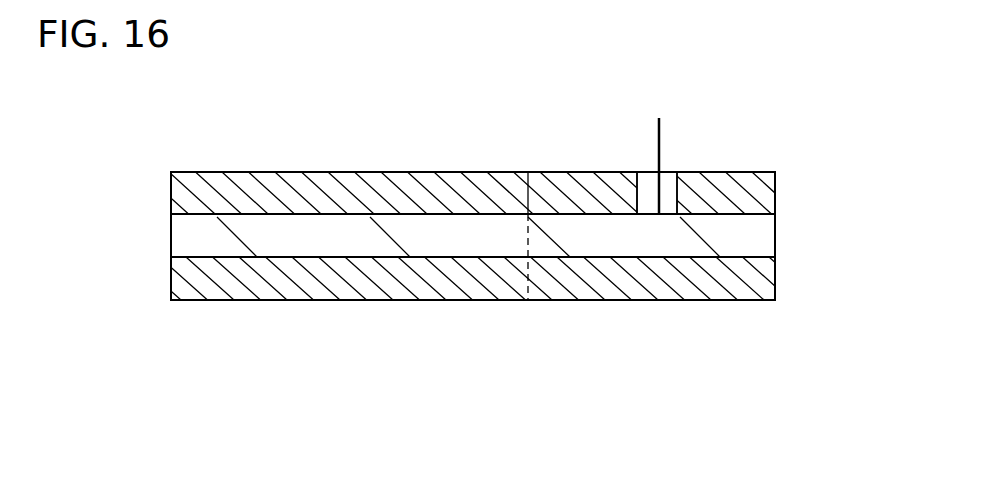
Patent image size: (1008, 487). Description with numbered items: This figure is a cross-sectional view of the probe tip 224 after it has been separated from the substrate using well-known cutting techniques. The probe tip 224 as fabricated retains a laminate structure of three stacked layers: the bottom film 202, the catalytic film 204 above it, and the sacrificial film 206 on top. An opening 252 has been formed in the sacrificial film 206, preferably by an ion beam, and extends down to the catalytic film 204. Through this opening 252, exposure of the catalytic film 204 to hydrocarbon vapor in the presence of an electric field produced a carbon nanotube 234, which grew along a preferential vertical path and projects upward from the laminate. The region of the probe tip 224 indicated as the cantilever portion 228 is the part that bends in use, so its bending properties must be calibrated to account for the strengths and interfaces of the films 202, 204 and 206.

The probe tip 224 is at (309, 143).
The carbon nanotube 234 is at (657, 155).
The opening 252 is at (670, 175).
The sacrificial film 206 is at (735, 200).
The catalytic film 204 is at (755, 238).
The film 202 is at (735, 282).
The cantilever portion 228 is at (775, 320).